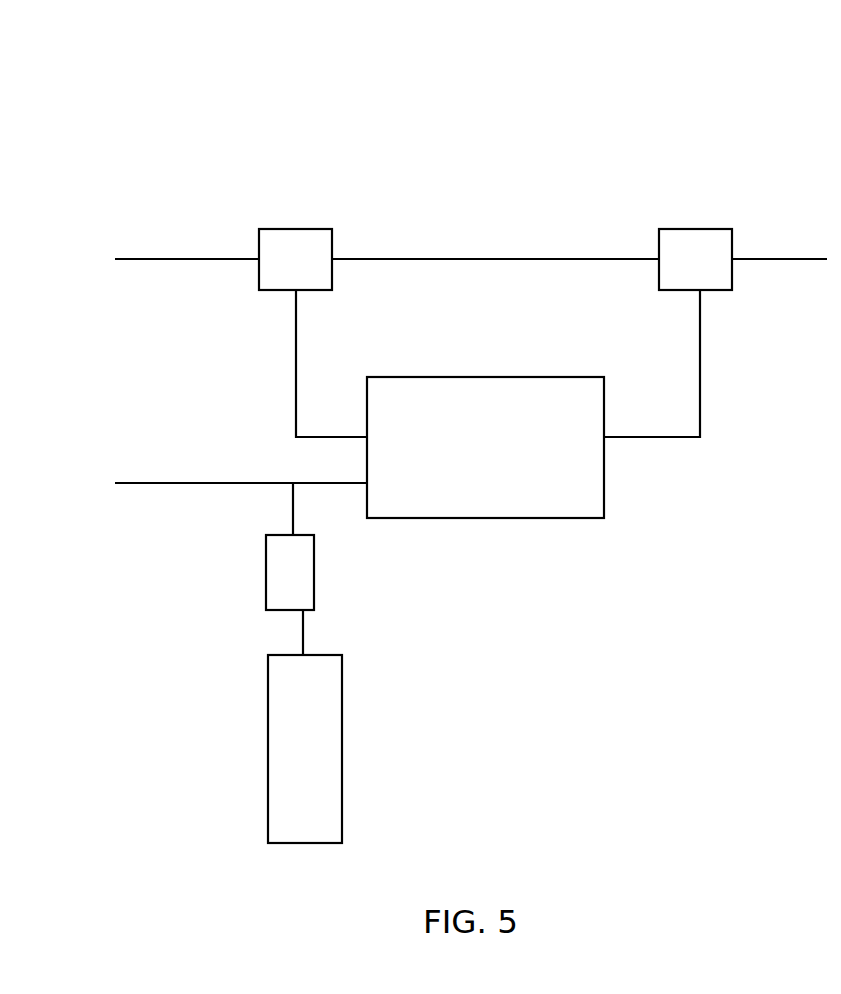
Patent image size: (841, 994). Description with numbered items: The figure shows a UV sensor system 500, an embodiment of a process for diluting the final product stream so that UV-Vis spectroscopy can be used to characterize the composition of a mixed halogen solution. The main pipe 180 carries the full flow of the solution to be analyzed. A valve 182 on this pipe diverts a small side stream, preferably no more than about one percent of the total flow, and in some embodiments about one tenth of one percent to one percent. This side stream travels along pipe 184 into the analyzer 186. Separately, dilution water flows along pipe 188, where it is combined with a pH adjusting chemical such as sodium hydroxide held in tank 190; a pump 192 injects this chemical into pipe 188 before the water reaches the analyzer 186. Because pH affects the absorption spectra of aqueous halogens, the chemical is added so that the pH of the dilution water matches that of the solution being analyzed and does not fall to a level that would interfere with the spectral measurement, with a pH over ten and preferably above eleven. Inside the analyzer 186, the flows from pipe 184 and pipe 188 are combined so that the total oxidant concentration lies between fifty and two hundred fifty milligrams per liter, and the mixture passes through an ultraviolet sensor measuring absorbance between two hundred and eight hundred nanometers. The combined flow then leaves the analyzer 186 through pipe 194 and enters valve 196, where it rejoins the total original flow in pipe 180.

The UV sensor system 500 is at (600, 62).
The pipe 180 is at (168, 258).
The valve 182 is at (297, 229).
The pipe 184 is at (296, 330).
The analyzer 186 is at (460, 518).
The pipe 188 is at (168, 483).
The tank 190 is at (268, 715).
The pump 192 is at (266, 565).
The pipe 194 is at (643, 440).
The valve 196 is at (695, 229).